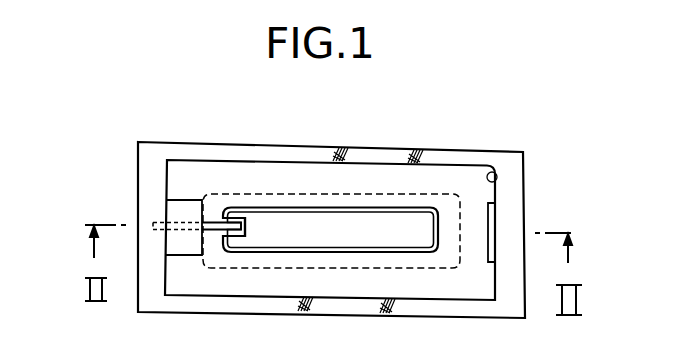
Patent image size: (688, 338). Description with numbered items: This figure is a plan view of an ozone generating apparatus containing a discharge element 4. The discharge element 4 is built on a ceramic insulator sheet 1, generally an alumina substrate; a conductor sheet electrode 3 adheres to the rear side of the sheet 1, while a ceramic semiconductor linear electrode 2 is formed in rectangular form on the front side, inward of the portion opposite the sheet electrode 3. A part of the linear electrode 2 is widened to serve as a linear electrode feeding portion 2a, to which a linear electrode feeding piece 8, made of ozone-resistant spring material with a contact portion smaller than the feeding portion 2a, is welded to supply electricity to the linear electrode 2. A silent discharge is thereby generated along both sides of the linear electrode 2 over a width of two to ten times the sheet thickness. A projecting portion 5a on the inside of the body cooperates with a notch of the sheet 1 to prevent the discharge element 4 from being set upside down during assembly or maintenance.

The ceramic insulator sheet 1 is at (462, 178).
The ceramic semiconductor linear electrode 2 is at (393, 245).
The linear electrode feeding portion 2a is at (224, 221).
The sheet electrode 3 is at (455, 200).
The discharge element 4 is at (360, 178).
The projecting portion 5a is at (497, 178).
The linear electrode feeding piece 8 is at (213, 221).